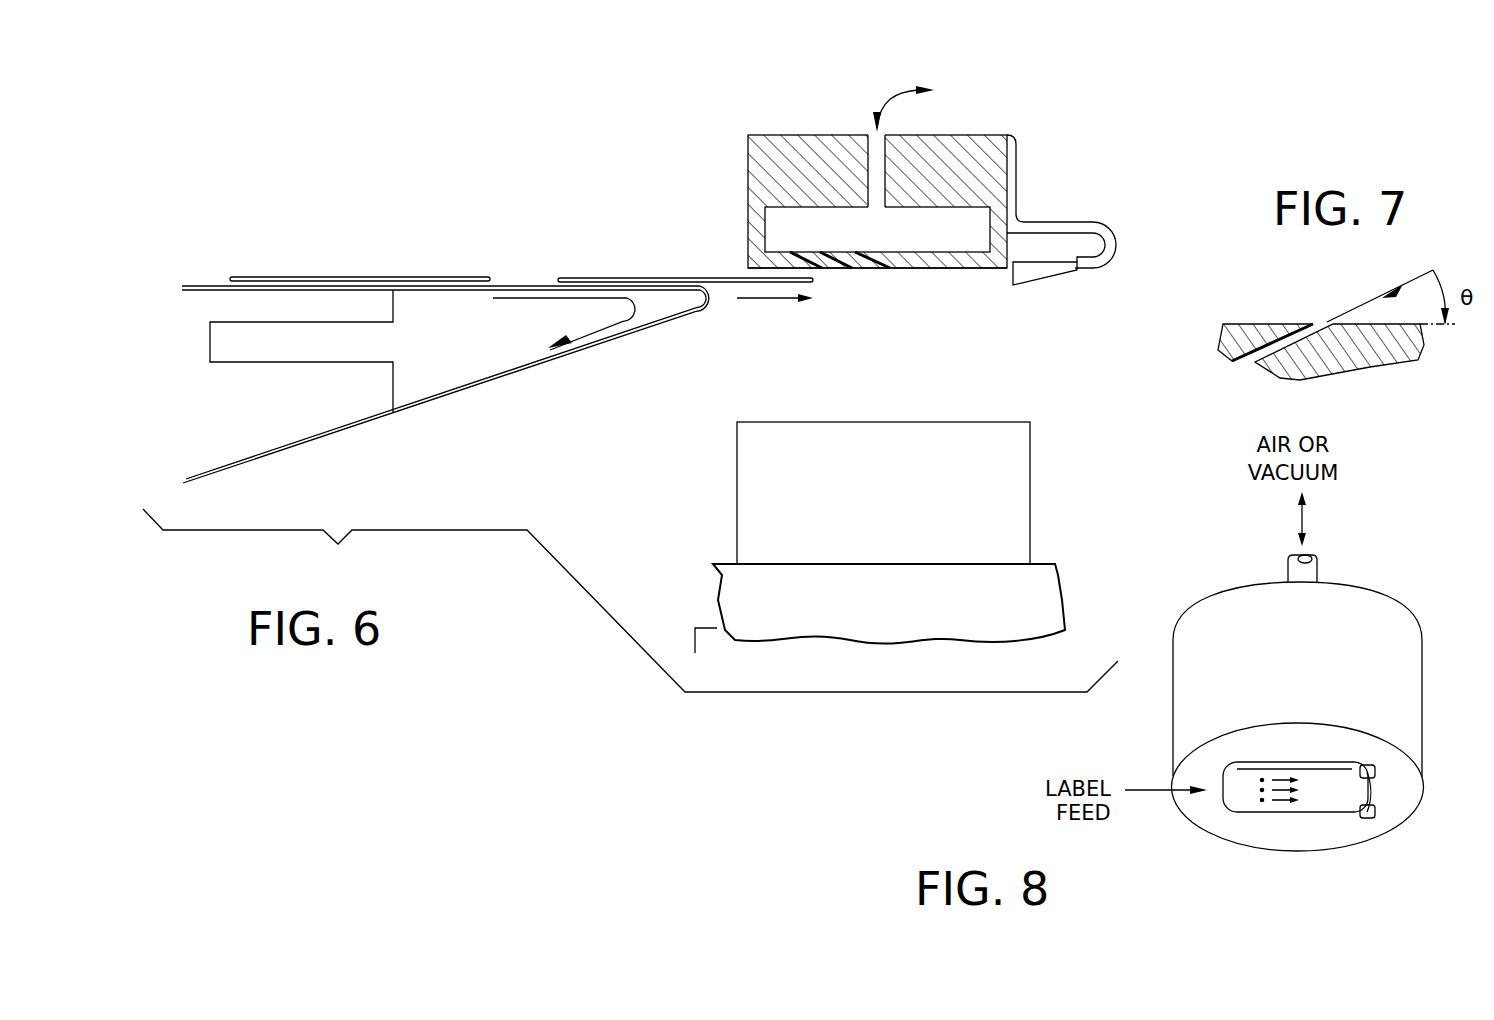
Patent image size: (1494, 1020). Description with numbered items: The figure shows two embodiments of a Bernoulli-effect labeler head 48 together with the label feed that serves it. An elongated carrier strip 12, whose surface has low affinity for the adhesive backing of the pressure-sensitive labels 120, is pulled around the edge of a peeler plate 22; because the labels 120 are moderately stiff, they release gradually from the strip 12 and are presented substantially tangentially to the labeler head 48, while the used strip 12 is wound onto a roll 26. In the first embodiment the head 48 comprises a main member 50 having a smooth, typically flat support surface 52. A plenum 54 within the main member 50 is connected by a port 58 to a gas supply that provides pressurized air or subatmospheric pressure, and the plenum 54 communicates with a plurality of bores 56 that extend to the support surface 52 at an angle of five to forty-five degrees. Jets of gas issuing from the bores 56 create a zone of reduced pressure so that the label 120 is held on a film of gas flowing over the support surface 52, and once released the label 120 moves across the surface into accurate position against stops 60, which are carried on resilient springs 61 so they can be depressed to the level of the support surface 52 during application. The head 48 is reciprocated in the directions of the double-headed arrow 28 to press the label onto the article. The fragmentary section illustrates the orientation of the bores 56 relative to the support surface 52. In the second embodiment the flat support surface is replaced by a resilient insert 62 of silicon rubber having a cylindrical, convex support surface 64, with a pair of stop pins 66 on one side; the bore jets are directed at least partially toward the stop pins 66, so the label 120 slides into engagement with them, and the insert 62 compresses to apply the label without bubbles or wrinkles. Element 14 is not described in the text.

In FIG. 6, the carrier strip 12 is at (220, 280).
In FIG. 6, the label 120 is at (342, 276).
In FIG. 6, the peeler plate 22 is at (438, 300).
In FIG. 6, the label 14 is at (620, 278).
In FIG. 6, the labeler head 48 is at (712, 160).
In FIG. 8, the labeler head 48 is at (1239, 560).
In FIG. 6, the main member 50 is at (985, 133).
In FIG. 7, the main member 50 is at (1385, 350).
In FIG. 8, the main member 50 is at (1398, 690).
In FIG. 6, the plenum 54 is at (938, 242).
In FIG. 6, the port 58 is at (876, 150).
In FIG. 8, the port 58 is at (1320, 570).
In FIG. 6, the bores 56 is at (893, 270).
In FIG. 7, the bores 56 is at (1250, 362).
In FIG. 8, the bores 56 is at (1260, 805).
In FIG. 6, the support surface 52 is at (940, 270).
In FIG. 7, the support surface 52 is at (1272, 322).
In FIG. 6, the resilient springs 61 is at (1087, 222).
In FIG. 6, the stops 60 is at (1040, 288).
In FIG. 6, the double-headed arrow 28 is at (1032, 455).
In FIG. 6, the roll 26 is at (1060, 578).
In FIG. 8, the resilient insert 62 is at (1305, 813).
In FIG. 8, the convex support surface 64 is at (1338, 800).
In FIG. 8, the stop pins 66 is at (1380, 770).